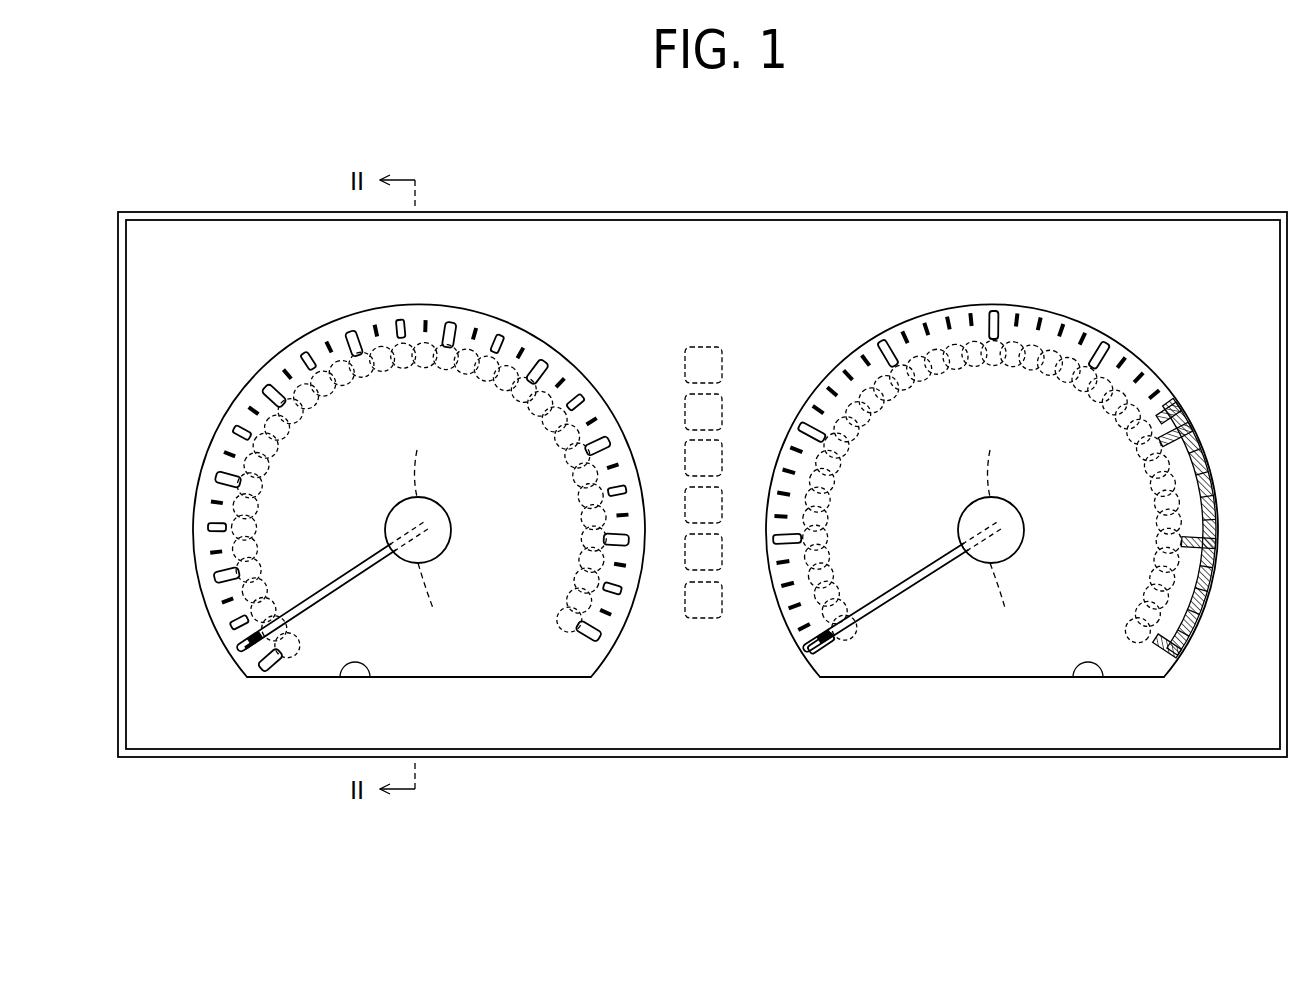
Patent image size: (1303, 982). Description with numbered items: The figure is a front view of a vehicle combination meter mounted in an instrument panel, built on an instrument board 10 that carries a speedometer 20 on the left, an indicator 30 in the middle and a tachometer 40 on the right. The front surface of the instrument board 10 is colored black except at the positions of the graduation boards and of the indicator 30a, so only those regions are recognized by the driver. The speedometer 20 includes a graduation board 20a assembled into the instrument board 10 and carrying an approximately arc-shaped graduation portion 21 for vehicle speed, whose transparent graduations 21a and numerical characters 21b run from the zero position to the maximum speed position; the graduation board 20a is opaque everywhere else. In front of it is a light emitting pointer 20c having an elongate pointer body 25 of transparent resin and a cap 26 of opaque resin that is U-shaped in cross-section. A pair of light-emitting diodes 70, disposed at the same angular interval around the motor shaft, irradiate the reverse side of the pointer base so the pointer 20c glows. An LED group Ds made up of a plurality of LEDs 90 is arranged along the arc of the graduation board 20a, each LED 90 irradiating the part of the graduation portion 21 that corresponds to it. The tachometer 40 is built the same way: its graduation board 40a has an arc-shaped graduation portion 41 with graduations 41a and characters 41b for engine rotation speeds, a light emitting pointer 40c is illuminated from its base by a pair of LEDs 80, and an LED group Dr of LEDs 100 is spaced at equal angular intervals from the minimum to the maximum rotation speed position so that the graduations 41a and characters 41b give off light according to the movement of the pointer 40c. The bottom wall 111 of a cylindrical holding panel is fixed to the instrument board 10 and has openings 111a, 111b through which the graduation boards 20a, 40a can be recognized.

The instrument board 10 is at (1128, 255).
The bottom wall 111 is at (832, 258).
The opening 111a is at (357, 690).
The opening 111b is at (1086, 690).
The speedometer 20 is at (395, 497).
The graduation board 20a is at (258, 363).
The light emitting pointer 20c is at (345, 555).
The graduation portion 21 is at (418, 462).
The graduations 21a is at (421, 462).
The numerical characters 21b is at (418, 459).
The pointer body 25 is at (350, 585).
The cap 26 is at (451, 520).
The light-emitting diodes 70 is at (426, 531).
The LEDs 90 is at (276, 650).
The LED group Ds is at (208, 458).
The indicator 30 is at (731, 486).
The indicator 30a is at (709, 632).
The tachometer 40 is at (992, 492).
The graduation board 40a is at (912, 308).
The light emitting pointer 40c is at (992, 506).
The graduation portion 41 is at (994, 454).
The graduations 41a is at (941, 453).
The characters 41b is at (996, 382).
The LEDs 80 is at (999, 531).
The LEDs 100 is at (966, 440).
The LED group Dr is at (840, 385).